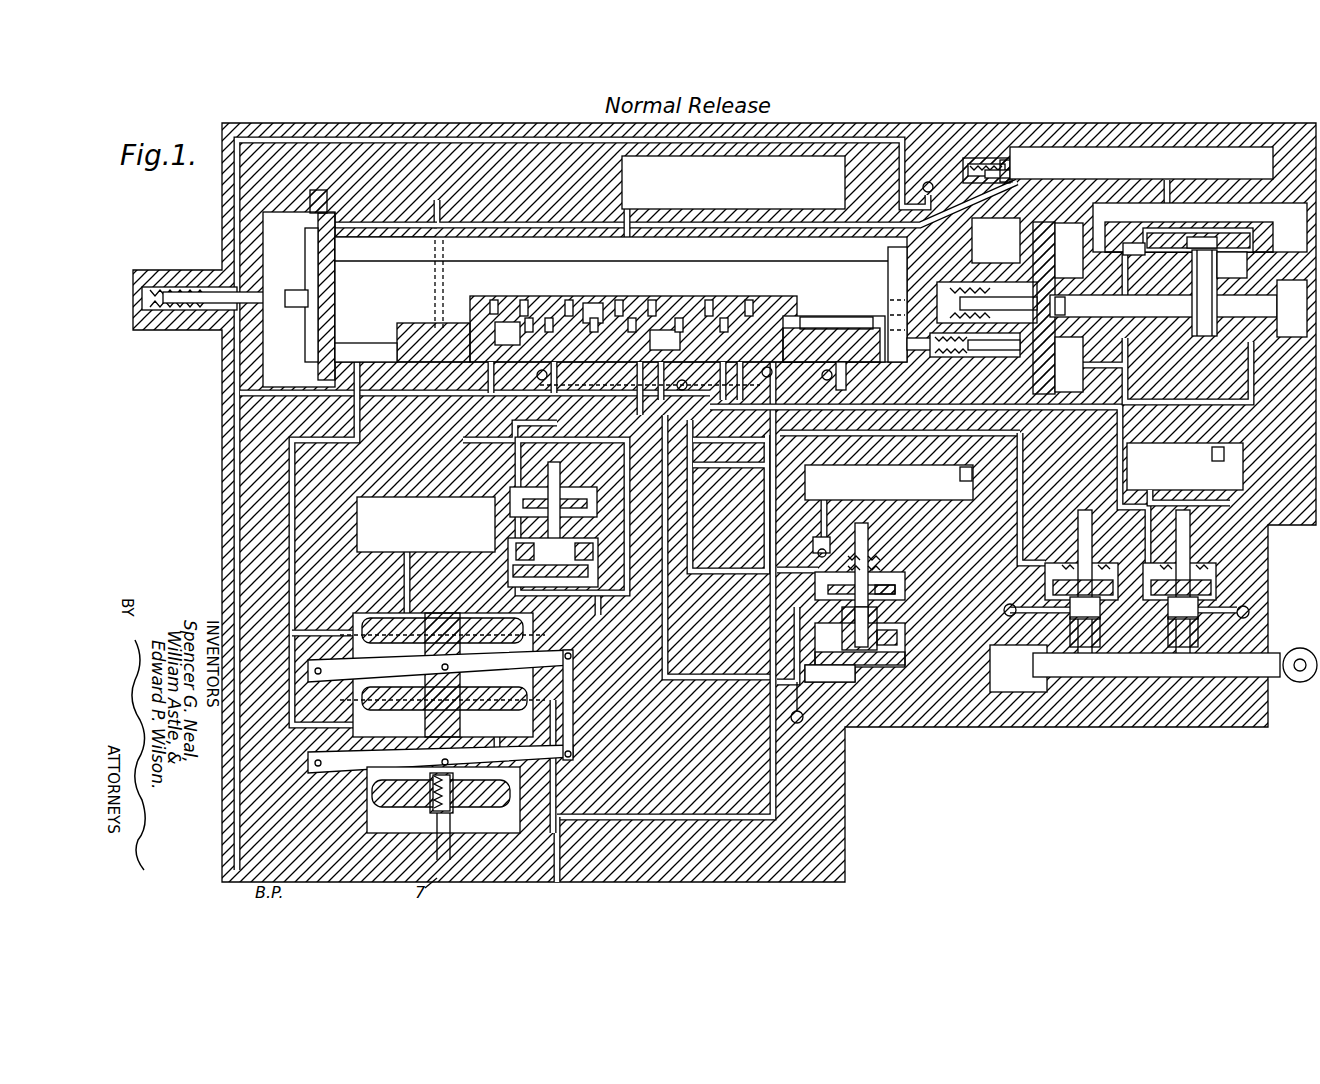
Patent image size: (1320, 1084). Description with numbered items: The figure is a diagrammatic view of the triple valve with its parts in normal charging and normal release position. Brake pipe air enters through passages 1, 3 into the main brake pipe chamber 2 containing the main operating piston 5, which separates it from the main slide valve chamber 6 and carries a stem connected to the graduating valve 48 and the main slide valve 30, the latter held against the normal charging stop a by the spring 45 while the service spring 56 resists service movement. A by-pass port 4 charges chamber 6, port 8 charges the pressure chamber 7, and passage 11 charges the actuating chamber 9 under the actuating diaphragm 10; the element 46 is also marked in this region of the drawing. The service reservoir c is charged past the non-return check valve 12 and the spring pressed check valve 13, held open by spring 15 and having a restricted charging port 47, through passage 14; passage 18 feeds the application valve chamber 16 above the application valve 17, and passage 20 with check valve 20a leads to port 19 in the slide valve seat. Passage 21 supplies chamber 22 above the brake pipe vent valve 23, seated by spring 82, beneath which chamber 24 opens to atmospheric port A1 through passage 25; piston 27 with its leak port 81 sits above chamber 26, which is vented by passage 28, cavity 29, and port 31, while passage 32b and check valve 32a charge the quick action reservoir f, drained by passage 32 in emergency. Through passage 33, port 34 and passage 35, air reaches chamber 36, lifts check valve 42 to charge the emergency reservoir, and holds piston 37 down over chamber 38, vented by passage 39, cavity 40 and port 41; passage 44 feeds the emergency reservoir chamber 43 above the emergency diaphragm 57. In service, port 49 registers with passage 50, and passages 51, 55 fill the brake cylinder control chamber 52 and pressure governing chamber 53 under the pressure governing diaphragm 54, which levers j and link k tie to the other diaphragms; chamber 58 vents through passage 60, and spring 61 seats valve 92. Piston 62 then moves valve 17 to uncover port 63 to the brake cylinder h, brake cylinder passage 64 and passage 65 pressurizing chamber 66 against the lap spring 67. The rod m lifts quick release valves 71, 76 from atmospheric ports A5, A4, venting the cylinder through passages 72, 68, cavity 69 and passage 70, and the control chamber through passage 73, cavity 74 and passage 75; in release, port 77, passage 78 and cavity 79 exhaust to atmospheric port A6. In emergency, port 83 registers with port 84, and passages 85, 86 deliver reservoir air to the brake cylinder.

The brake pipe passage 1 is at (472, 203).
The main brake pipe chamber 2 is at (305, 296).
The passage 3 is at (237, 360).
The by-pass port 4 is at (305, 215).
The main operating piston 5 is at (302, 268).
The main slide valve chamber 6 is at (621, 299).
The pressure chamber 7 is at (733, 182).
The port 8 is at (628, 212).
The actuating chamber 9 is at (426, 614).
The actuating diaphragm 10 is at (442, 675).
The passage 11 is at (292, 524).
The non-return check valve 12 is at (928, 180).
The spring pressed check valve 13 is at (968, 158).
The passage 14 is at (987, 158).
The spring 15 is at (1003, 160).
The application valve chamber 16 is at (1200, 227).
The application valve 17 is at (1130, 232).
The passage 18 is at (1170, 205).
The port 19 is at (402, 365).
The passage 20 is at (778, 234).
The check valve 20a is at (503, 192).
The passage 21 is at (237, 395).
The chamber 22 is at (860, 585).
The brake pipe vent valve 23 is at (886, 581).
The chamber 24 is at (888, 636).
The passage 25 is at (830, 685).
The chamber 26 is at (860, 637).
The piston 27 is at (903, 656).
The passage 28 is at (668, 646).
The cavity 29 is at (709, 300).
The main slide valve 30 is at (410, 326).
The port 31 is at (724, 318).
The passage 32 is at (726, 470).
The check valve 32a is at (815, 552).
The passage 32b is at (818, 520).
The passage 33 is at (619, 329).
The port and passage 34 is at (522, 300).
The port and passage 35 is at (512, 441).
The chamber 36 is at (585, 550).
The piston 37 is at (505, 575).
The chamber 38 is at (523, 550).
The passage 39 is at (601, 600).
The cavity 40 is at (569, 300).
The port 41 is at (549, 318).
The check valve 42 is at (506, 474).
The emergency reservoir chamber 43 is at (378, 668).
The passage 44 is at (407, 577).
The spring 45 is at (893, 300).
The port 46 is at (349, 236).
The restricted charging port 47 is at (1010, 175).
The graduating valve 48 is at (632, 318).
The application port 49 is at (810, 330).
The port and passage 50 is at (790, 330).
The passage 51 is at (988, 358).
The brake cylinder control chamber 52 is at (996, 240).
The pressure governing chamber 53 is at (441, 802).
The pressure governing diaphragm 54 is at (553, 770).
The passage 55 is at (776, 778).
The service spring 56 is at (172, 333).
The emergency diaphragm 57 is at (355, 633).
The chamber 58 is at (440, 670).
The passage 60 is at (559, 870).
The spring 61 is at (458, 778).
The piston 62 is at (1058, 308).
The port and passage 63 is at (1163, 306).
The brake cylinder passage 64 is at (1134, 402).
The passage 65 is at (1090, 379).
The brake cylinder chamber 66 is at (1066, 345).
The lap spring 67 is at (990, 284).
The brake cylinder port 68 is at (820, 388).
The cavity 69 is at (749, 300).
The passage 70 is at (1018, 524).
The quick release valve 71 is at (1100, 640).
The passage 72 is at (1046, 417).
The port and passage 73 is at (679, 318).
The cavity 74 is at (652, 300).
The passage 75 is at (1185, 471).
The quick release valve 76 is at (1212, 578).
The port and passage 77 is at (1210, 236).
The passage 78 is at (1255, 345).
The cavity 79 is at (841, 362).
The leak port 81 is at (888, 663).
The spring 82 is at (889, 481).
The port 83 is at (620, 300).
The port 84 is at (594, 318).
The port and passage 85 is at (529, 318).
The port and passage 86 is at (494, 300).
The valve 92 is at (430, 822).
The normal charging stop a is at (890, 322).
The service reservoir c is at (1255, 150).
The quick action reservoir f is at (965, 477).
The brake cylinder h is at (1218, 456).
The lever j is at (498, 742).
The link k is at (562, 682).
The manually operable rod m is at (1175, 665).
The atmospheric port A1 is at (803, 722).
The atmospheric port A4 is at (1250, 611).
The atmospheric port A5 is at (1018, 668).
The atmospheric port A6 is at (827, 368).